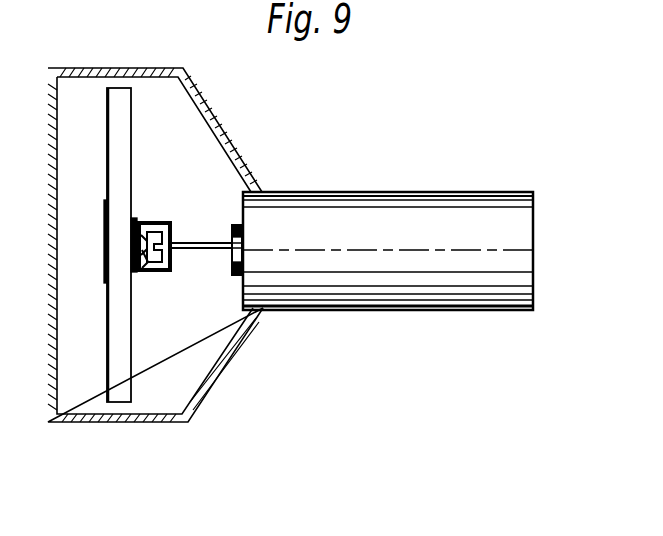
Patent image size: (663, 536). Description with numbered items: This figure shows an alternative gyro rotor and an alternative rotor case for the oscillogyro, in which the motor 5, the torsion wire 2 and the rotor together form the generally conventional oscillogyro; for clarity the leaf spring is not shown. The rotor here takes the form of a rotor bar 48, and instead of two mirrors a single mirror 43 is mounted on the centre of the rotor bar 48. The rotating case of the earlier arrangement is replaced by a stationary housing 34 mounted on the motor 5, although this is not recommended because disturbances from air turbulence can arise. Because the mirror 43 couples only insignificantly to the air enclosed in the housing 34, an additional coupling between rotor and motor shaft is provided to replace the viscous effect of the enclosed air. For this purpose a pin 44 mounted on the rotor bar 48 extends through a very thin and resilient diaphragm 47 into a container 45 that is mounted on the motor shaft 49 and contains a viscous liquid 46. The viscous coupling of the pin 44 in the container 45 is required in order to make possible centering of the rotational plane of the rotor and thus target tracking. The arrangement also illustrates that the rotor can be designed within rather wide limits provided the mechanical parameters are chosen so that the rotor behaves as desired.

The torsion wire 2 is at (117, 246).
The motor 5 is at (463, 220).
The stationary housing 34 is at (190, 82).
The mirror 43 is at (105, 230).
The pin 44 is at (139, 188).
The container 45 is at (172, 257).
The viscous liquid 46 is at (170, 232).
The diaphragm 47 is at (158, 263).
The rotor bar 48 is at (119, 357).
The motor shaft 49 is at (211, 240).